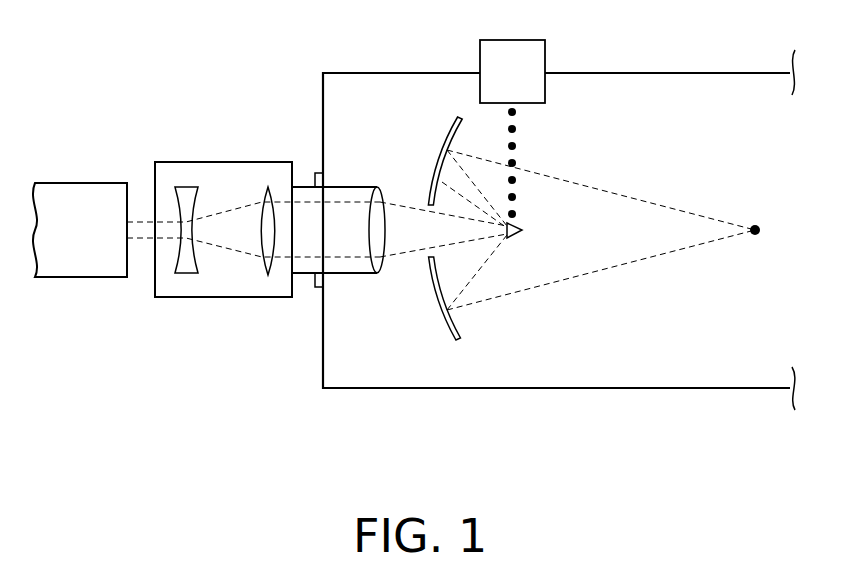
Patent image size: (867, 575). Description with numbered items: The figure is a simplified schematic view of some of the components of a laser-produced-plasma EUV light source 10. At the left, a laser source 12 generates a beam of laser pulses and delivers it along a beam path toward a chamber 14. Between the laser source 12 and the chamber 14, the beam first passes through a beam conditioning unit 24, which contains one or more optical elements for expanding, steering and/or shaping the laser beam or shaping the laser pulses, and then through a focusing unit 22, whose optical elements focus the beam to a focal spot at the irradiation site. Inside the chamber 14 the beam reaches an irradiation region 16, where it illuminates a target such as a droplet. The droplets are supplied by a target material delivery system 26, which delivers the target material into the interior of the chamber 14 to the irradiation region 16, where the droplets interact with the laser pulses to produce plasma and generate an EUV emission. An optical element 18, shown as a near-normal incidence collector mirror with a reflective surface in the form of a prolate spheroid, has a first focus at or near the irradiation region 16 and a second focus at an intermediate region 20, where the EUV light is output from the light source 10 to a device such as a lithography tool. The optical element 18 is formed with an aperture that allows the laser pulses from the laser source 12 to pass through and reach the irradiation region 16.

The EUV light source 10 is at (232, 99).
The laser source 12 is at (66, 239).
The chamber 14 is at (607, 360).
The irradiation region 16 is at (523, 231).
The optical element 18 is at (440, 305).
The intermediate region 20 is at (757, 236).
The focusing unit 22 is at (380, 190).
The beam conditioning unit 24 is at (223, 298).
The target material delivery system 26 is at (497, 84).